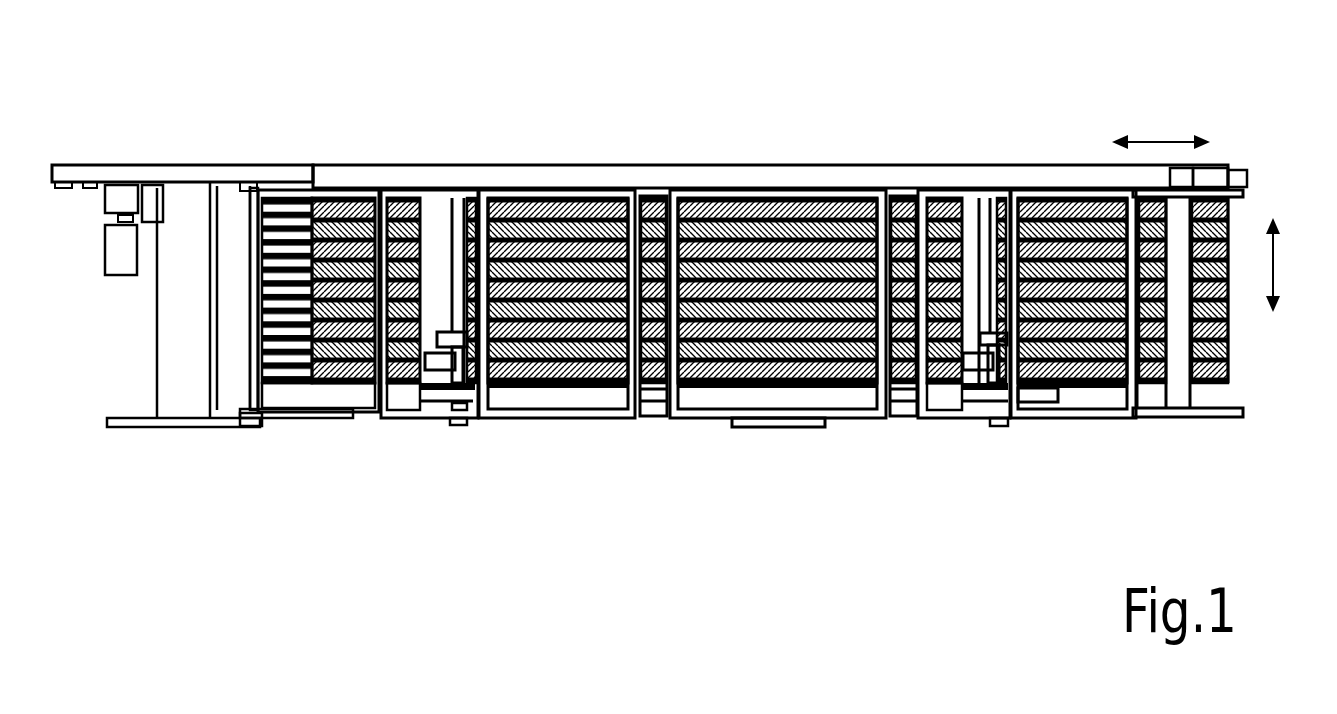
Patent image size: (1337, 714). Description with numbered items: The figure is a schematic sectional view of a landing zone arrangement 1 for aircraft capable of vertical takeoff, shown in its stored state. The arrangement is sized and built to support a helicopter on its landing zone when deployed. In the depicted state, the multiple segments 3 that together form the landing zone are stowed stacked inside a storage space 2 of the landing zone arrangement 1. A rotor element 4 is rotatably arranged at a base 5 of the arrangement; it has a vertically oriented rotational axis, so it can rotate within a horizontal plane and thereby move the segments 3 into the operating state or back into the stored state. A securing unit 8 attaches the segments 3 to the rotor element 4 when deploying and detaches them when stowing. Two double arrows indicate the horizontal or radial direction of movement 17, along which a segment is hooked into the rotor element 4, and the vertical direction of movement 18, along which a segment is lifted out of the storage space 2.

The landing zone arrangement 1 is at (686, 284).
The storage space 2 is at (556, 220).
The segments 3 is at (688, 228).
The rotor element 4 is at (183, 172).
The base 5 is at (175, 377).
The securing unit 8 is at (316, 148).
The horizontal direction of movement 17 is at (1158, 142).
The vertical direction of movement 18 is at (1276, 262).